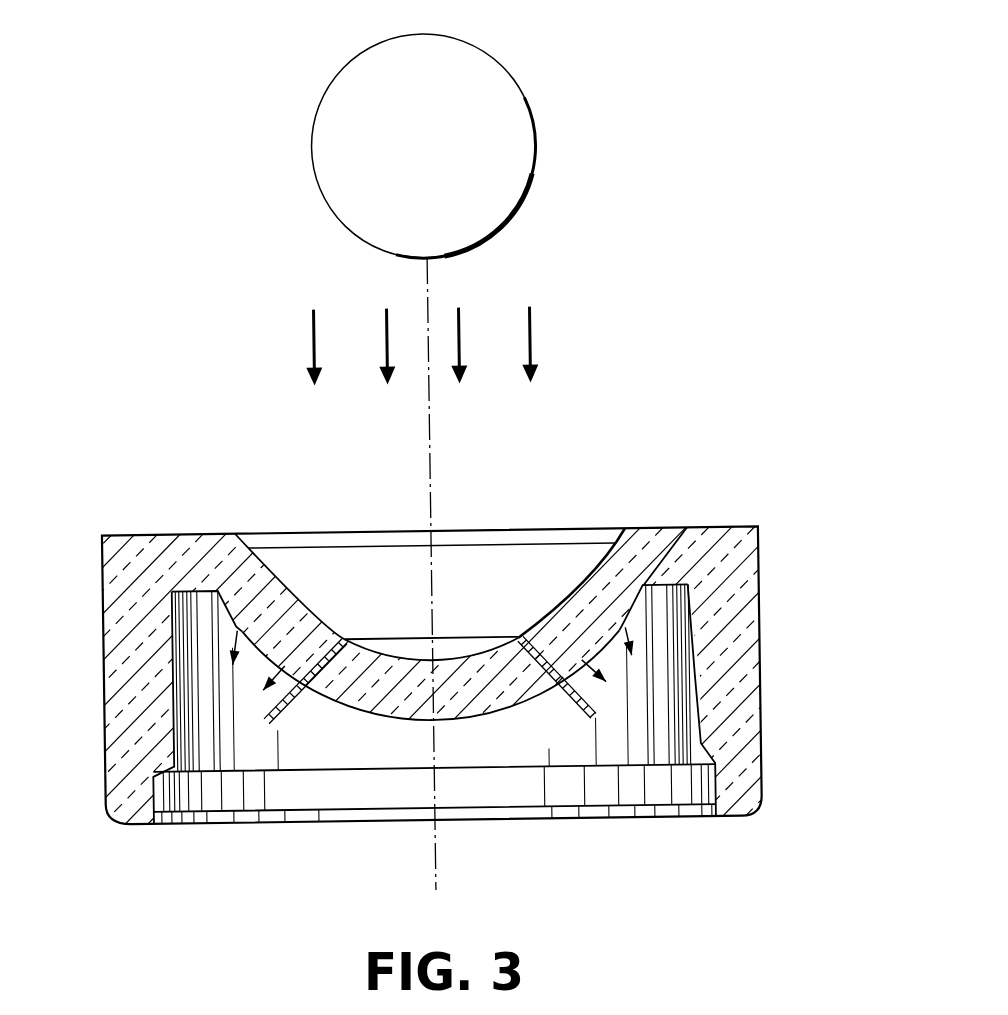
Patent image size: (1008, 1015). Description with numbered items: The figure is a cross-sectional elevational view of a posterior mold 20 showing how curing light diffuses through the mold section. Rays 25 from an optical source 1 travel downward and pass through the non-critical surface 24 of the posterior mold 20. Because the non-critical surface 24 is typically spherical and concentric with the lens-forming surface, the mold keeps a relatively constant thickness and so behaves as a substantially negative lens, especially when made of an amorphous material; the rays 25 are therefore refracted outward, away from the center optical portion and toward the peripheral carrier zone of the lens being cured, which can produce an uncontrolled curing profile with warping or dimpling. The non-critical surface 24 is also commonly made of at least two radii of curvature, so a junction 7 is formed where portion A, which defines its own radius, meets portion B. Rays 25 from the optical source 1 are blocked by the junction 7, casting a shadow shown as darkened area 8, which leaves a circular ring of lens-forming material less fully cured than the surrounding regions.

The optical source 1 is at (556, 94).
The rays 25 is at (535, 314).
The posterior mold 20 is at (775, 584).
The portion B is at (292, 575).
The non-critical surface 24 is at (585, 583).
The junction 7 is at (344, 636).
The portion A is at (444, 646).
The darkened area 8 is at (280, 711).